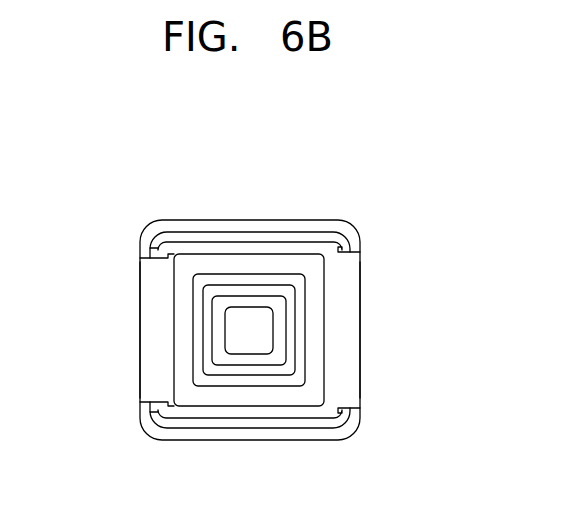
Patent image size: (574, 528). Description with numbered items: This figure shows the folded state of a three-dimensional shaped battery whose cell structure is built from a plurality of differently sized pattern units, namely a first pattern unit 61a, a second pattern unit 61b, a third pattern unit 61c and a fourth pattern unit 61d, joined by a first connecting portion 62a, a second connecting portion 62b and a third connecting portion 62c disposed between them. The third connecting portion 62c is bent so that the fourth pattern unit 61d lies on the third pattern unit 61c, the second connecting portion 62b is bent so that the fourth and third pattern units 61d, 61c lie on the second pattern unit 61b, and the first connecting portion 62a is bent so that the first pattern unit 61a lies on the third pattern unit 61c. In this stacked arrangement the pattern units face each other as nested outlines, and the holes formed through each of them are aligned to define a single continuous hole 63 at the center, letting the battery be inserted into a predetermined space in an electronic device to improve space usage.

The first pattern unit 61a is at (192, 262).
The second pattern unit 61b is at (321, 226).
The third pattern unit 61c is at (231, 248).
The fourth pattern unit 61d is at (280, 235).
The first connecting portion 62a is at (145, 331).
The second connecting portion 62b is at (352, 365).
The third connecting portion 62c is at (142, 407).
The continuous hole 63 is at (247, 342).